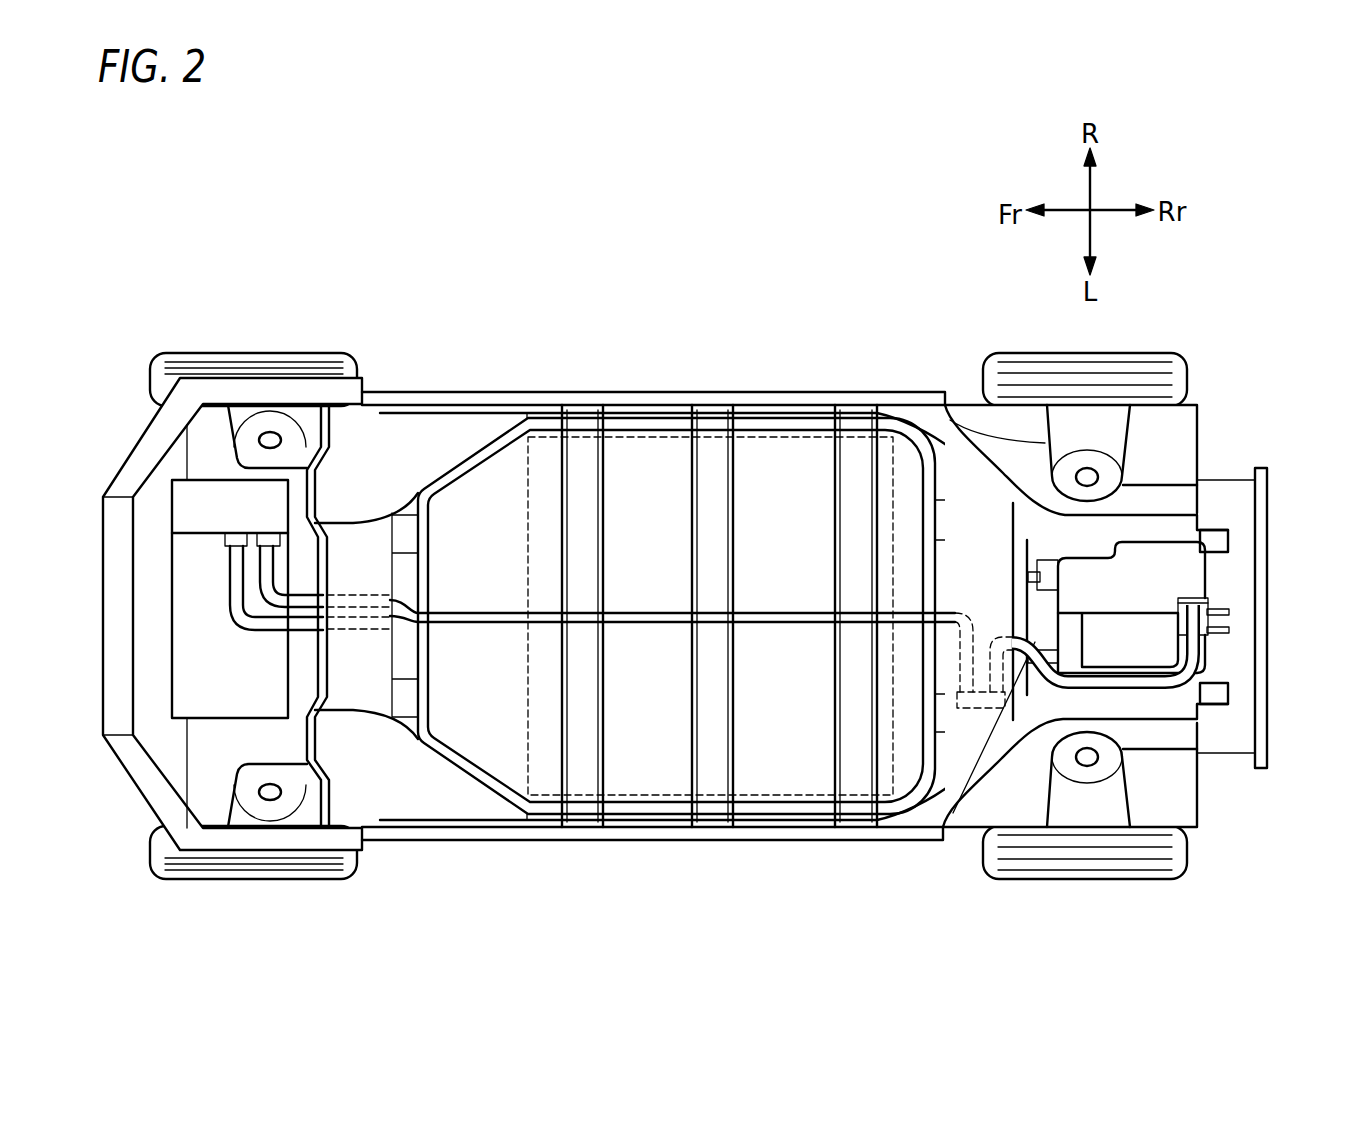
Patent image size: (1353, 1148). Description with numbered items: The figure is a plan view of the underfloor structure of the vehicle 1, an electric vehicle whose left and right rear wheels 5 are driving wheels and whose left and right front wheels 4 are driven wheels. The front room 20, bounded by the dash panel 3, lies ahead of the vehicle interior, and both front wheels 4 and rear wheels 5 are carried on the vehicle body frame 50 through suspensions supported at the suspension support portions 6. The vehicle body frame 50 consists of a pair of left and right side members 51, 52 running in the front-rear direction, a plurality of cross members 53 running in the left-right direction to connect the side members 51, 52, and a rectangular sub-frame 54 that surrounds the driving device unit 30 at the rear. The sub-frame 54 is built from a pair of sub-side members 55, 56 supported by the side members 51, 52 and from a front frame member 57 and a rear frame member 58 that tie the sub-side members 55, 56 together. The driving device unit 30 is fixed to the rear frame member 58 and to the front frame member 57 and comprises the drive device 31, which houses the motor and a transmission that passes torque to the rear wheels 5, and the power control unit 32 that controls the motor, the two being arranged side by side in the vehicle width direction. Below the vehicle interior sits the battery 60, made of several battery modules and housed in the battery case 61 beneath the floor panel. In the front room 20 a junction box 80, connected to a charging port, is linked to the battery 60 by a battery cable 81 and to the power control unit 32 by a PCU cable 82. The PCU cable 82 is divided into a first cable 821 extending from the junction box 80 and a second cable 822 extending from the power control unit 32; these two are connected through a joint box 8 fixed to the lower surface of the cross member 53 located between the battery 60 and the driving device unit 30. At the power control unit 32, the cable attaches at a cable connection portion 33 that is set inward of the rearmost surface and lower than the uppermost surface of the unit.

The vehicle 1 is at (700, 592).
The dash panel 3 is at (313, 478).
The front wheels 4 is at (287, 352).
The rear wheels 5 is at (1122, 353).
The suspension support portions 6 is at (230, 440).
The joint box 8 is at (977, 708).
The front room 20 is at (219, 599).
The driving device unit 30 is at (1190, 539).
The drive device 31 is at (1213, 657).
The power control unit (PCU) 32 is at (1213, 573).
The cable connection portion 33 is at (1193, 600).
The vehicle body frame 50 is at (685, 616).
The side member 51 is at (748, 392).
The side member 52 is at (777, 840).
The cross members 53 is at (353, 557).
The sub-frame 54 is at (1227, 561).
The sub-side member 55 is at (1217, 538).
The sub-side member 56 is at (1232, 712).
The front frame member 57 is at (1010, 655).
The rear frame member 58 is at (1217, 695).
The battery 60 is at (530, 470).
The battery case 61 is at (640, 422).
The junction box 80 is at (185, 572).
The battery cable 81 is at (243, 610).
The PCU cable 82 is at (292, 620).
The first cable 821 is at (782, 610).
The second cable 822 is at (1200, 690).